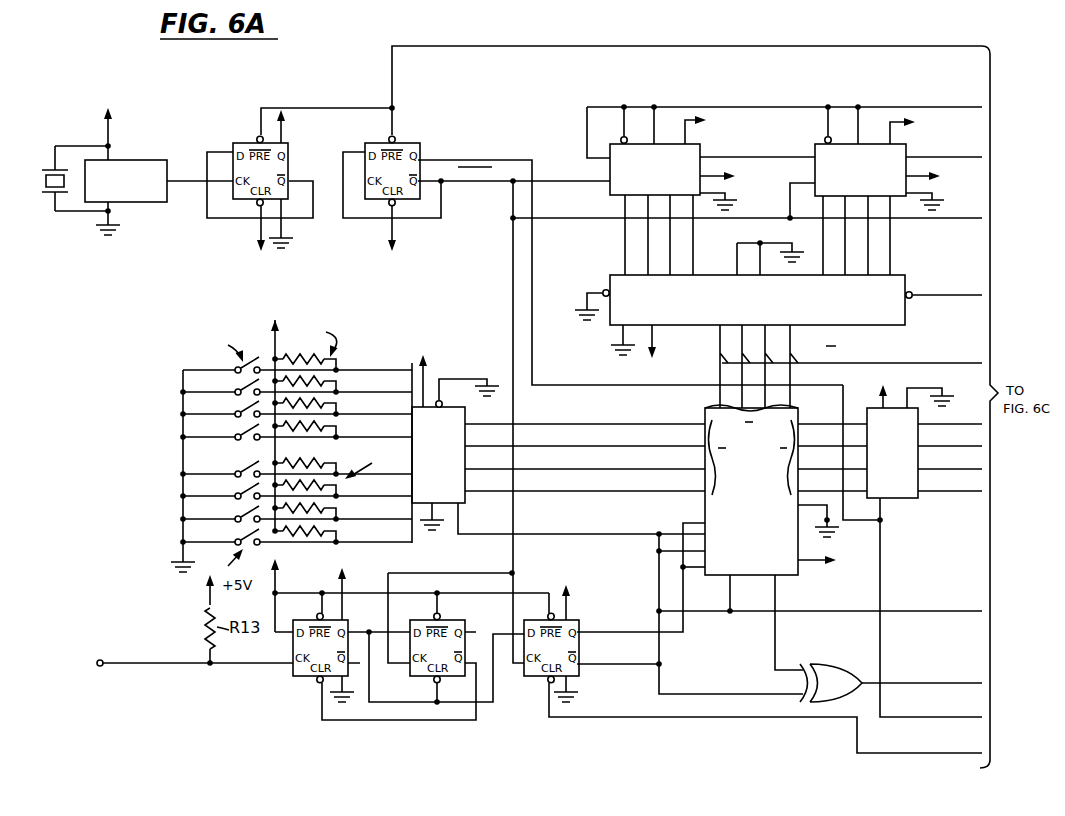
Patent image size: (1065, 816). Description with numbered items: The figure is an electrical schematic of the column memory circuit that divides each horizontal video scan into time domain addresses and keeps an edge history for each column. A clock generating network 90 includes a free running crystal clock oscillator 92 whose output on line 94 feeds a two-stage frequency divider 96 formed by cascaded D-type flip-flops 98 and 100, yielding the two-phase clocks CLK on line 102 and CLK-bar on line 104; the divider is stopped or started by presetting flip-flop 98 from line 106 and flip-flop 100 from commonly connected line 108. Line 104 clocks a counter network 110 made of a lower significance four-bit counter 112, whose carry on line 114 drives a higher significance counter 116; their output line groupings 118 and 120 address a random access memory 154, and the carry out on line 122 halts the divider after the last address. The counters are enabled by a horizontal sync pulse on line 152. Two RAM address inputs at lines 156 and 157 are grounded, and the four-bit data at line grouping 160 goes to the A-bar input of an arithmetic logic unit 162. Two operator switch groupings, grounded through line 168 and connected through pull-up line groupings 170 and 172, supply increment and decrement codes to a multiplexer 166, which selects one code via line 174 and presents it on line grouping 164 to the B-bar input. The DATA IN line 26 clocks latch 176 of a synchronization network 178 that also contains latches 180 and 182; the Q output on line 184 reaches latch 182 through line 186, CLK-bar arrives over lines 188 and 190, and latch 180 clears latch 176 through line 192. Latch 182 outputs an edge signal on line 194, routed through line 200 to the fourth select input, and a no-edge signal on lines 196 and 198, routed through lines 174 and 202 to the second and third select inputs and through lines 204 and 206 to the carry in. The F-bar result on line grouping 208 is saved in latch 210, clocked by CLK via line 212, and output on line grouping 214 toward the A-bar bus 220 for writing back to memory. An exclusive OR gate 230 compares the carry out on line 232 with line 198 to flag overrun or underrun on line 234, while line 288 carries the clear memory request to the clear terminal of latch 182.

The DATA IN line 26 is at (145, 663).
The clock generating network 90 is at (190, 112).
The crystal clock oscillator 92 is at (136, 160).
The oscillator output line 94 is at (205, 181).
The two-stage frequency divider 96 is at (362, 137).
The first D-type flip-flop 98 is at (289, 145).
The second D-type flip-flop 100 is at (418, 143).
The CLK line 102 is at (514, 160).
The CLK-bar line 104 is at (462, 184).
The preset line 106 is at (333, 108).
The common preset line 108 is at (548, 46).
The counter network 110 is at (784, 190).
The lower significance four-bit counter 112 is at (713, 132).
The carry output line 114 is at (752, 160).
The higher significance counter 116 is at (826, 137).
The counter output line grouping 118 is at (603, 250).
The counter output line grouping 120 is at (905, 242).
The counter carry output line 122 is at (928, 157).
The horizontal sync line 152 is at (767, 107).
The random access memory (RAM) 154 is at (905, 278).
The address input line 156 is at (737, 243).
The address input line 157 is at (760, 266).
The RAM output/input line grouping 160 is at (708, 352).
The arithmetic logic unit (ALU) 162 is at (708, 408).
The ALU B-bar input line grouping 164 is at (672, 498).
The multiplexer 166 is at (465, 412).
The ground line 168 is at (183, 457).
The increment code line grouping 170 is at (394, 362).
The decrement code line grouping 172 is at (388, 549).
The multiplexer select line 174 is at (576, 518).
The D-type latch 176 is at (293, 680).
The signal treatment and clock synchronization network 178 is at (448, 735).
The D-type latch 180 is at (456, 620).
The D-type latch 182 is at (578, 620).
The latch Q output line 184 is at (377, 612).
The line 186 is at (493, 703).
The clock line 188 is at (512, 553).
The clock line 190 is at (456, 557).
The clear line 192 is at (345, 722).
The latch Q output line 194 is at (684, 632).
The latch Q-bar output line 196 is at (608, 666).
The line 198 is at (706, 694).
The line 200 is at (688, 569).
The line 202 is at (671, 552).
The carry-in line 204 is at (731, 595).
The line 206 is at (912, 611).
The ALU F-bar output line grouping 208 is at (836, 418).
The latch 210 is at (910, 498).
The clock line 212 is at (881, 557).
The latch output line grouping 214 is at (943, 500).
The A-bar bus 220 is at (900, 363).
The exclusive OR gate 230 is at (828, 668).
The carry out line 232 is at (776, 632).
The exclusive OR output line 234 is at (905, 683).
The clear line 288 is at (905, 753).